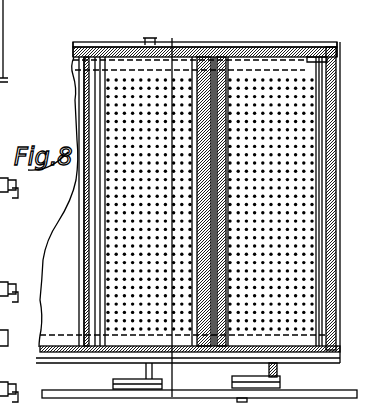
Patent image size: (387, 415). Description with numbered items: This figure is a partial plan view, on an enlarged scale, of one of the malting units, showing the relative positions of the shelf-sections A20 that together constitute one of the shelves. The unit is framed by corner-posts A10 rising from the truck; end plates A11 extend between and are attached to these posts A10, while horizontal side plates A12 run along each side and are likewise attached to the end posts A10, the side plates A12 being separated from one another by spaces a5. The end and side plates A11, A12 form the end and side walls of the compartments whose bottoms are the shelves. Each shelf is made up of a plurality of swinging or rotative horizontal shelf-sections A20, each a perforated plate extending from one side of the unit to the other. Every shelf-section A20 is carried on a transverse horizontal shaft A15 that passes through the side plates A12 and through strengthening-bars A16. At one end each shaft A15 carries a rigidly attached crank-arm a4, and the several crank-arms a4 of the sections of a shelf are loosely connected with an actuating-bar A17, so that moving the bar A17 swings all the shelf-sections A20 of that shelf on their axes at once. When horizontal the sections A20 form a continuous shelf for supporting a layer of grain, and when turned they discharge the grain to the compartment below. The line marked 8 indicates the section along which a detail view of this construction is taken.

The corner-post A10 is at (334, 56).
The end plate A11 is at (339, 187).
The side plate A12 is at (192, 54).
The transverse horizontal shaft A15 is at (267, 43).
The strengthening-bar A16 is at (310, 42).
The actuating-bar A17 is at (334, 393).
The shelf-section A20 is at (307, 243).
The crank-arm a4 is at (260, 368).
The space a5 is at (0, 250).
The section line 8- 8 is at (168, 218).